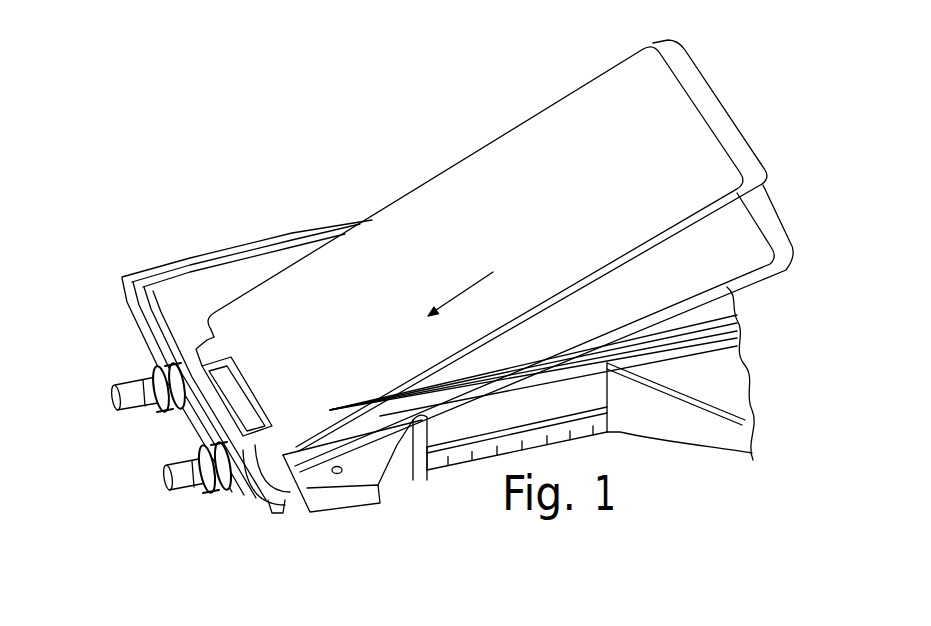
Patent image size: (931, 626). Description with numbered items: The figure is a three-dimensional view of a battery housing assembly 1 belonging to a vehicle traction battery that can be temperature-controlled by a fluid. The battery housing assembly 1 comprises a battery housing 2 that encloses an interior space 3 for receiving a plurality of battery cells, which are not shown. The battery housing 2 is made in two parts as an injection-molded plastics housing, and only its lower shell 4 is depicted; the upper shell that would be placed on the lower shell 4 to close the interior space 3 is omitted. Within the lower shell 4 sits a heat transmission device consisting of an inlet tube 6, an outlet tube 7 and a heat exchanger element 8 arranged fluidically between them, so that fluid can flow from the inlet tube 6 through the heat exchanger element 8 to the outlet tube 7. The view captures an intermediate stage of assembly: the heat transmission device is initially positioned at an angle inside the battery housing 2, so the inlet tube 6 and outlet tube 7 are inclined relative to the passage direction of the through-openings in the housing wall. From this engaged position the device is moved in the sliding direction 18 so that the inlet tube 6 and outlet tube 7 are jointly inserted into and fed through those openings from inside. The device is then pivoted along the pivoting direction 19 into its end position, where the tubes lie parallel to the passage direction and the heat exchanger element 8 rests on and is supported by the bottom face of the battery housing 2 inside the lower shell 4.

The battery housing assembly 1 is at (178, 207).
The battery housing 2 is at (126, 303).
The interior space 3 is at (190, 305).
The lower shell 4 is at (163, 265).
The inlet tube 6 is at (125, 412).
The outlet tube 7 is at (183, 487).
The heat exchanger element 8 is at (615, 110).
The sliding direction 18 is at (462, 292).
The pivoting direction 19 is at (590, 234).